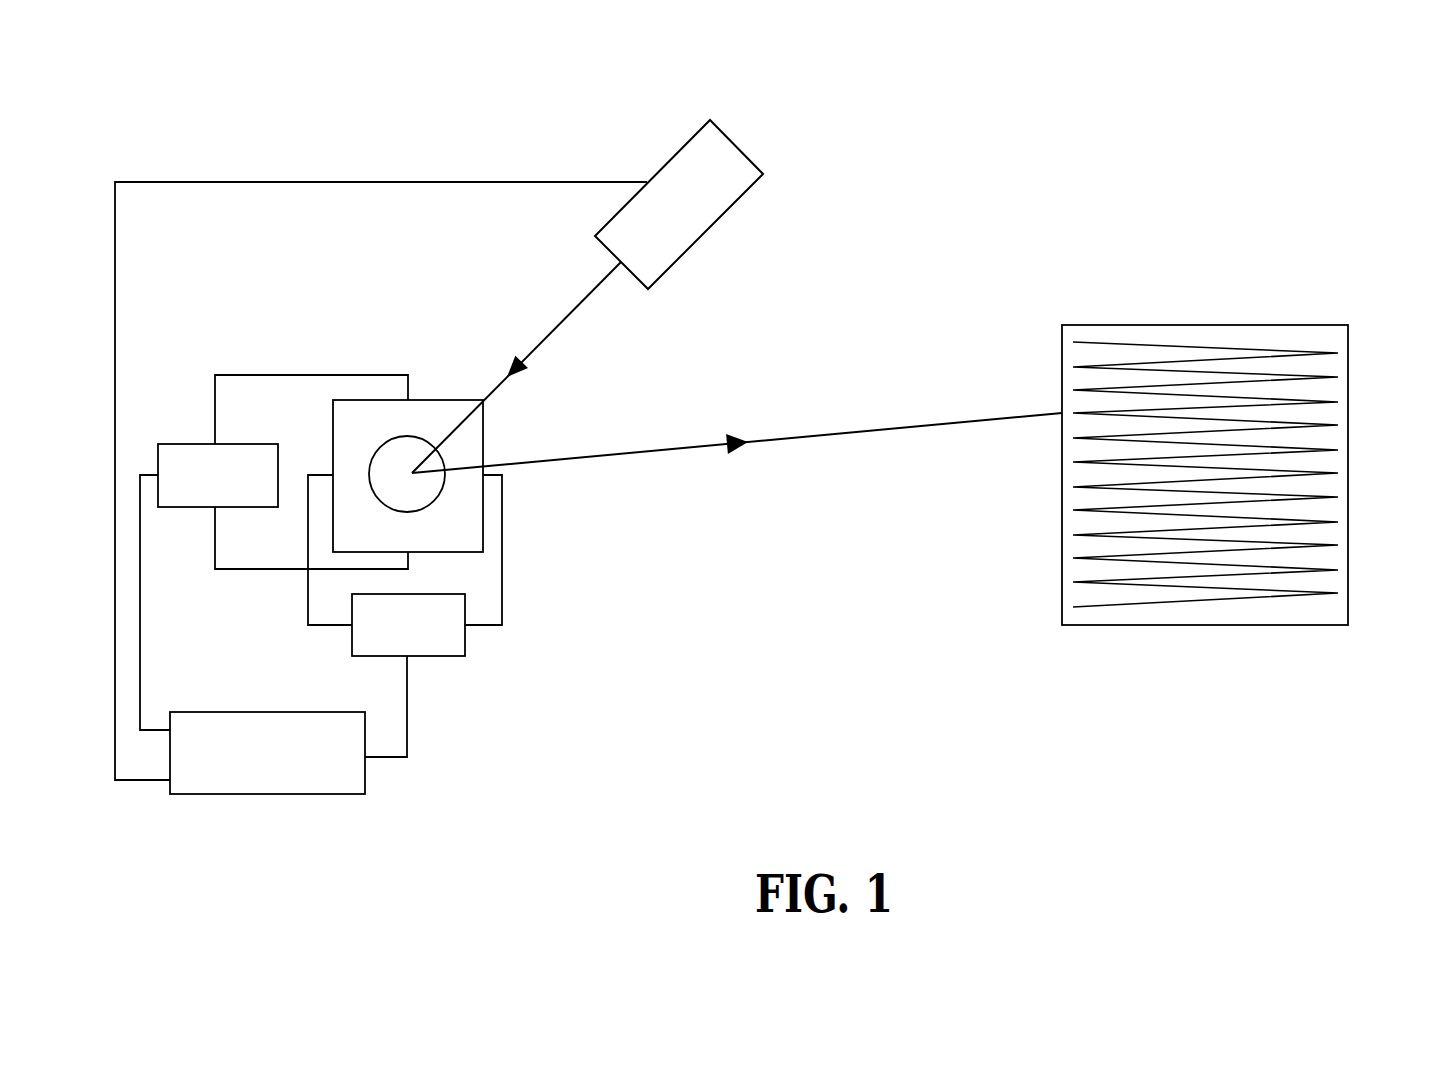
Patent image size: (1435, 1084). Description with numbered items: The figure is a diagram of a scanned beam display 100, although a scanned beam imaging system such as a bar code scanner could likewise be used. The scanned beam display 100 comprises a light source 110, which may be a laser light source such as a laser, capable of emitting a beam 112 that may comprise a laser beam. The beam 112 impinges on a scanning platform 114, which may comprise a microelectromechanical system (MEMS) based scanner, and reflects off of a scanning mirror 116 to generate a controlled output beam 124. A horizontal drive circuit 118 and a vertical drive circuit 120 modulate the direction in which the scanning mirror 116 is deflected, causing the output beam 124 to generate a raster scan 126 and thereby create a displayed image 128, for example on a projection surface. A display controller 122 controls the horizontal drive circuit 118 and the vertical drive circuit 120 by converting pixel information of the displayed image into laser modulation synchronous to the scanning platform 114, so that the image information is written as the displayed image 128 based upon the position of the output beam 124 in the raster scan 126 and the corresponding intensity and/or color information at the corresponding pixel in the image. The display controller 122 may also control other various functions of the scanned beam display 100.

The scanned beam display 100 is at (1226, 178).
The light source 110 is at (742, 150).
The beam 112 is at (565, 314).
The scanning platform 114 is at (445, 400).
The scanning mirror 116 is at (432, 505).
The horizontal drive circuit 118 is at (198, 444).
The vertical drive circuit 120 is at (466, 634).
The display controller 122 is at (366, 784).
The output beam 124 is at (662, 452).
The raster scan 126 is at (1237, 348).
The displayed image 128 is at (1348, 352).